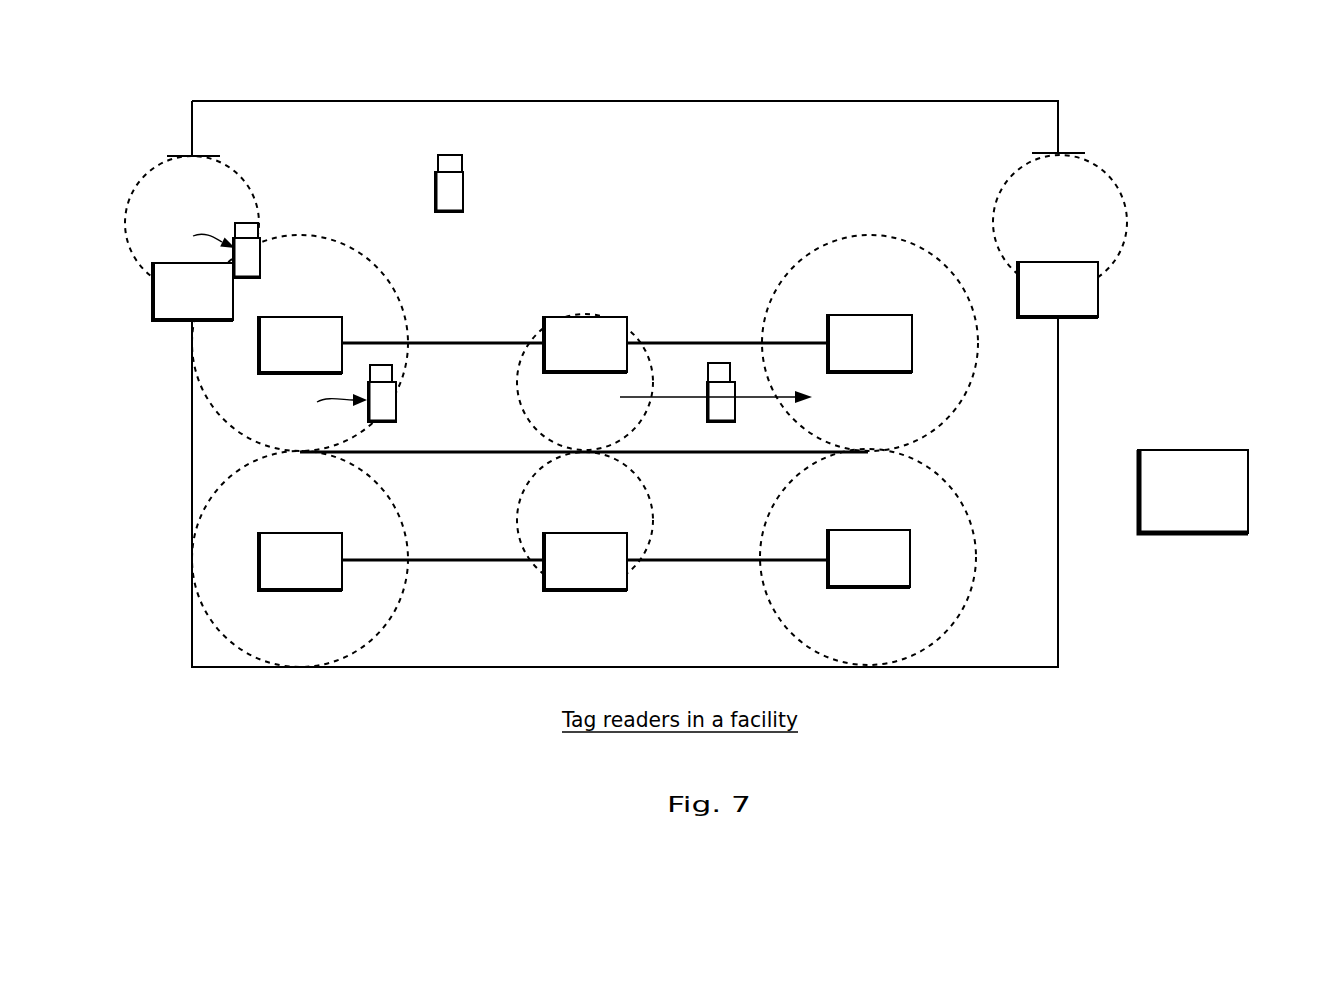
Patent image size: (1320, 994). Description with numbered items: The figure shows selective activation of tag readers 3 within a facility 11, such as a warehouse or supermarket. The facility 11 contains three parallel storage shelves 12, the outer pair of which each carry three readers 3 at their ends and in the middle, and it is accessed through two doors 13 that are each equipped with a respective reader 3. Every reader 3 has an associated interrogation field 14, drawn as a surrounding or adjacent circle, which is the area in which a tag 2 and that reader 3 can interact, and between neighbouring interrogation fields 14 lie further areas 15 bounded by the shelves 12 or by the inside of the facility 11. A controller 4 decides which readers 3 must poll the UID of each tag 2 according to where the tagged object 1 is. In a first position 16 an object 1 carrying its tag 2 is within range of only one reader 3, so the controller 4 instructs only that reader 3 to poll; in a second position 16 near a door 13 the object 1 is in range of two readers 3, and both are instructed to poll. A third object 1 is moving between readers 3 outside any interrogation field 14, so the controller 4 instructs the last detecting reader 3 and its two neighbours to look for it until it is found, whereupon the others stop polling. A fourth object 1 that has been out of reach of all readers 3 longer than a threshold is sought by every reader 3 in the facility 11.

The tagged object 1 is at (380, 403).
The tag 2 is at (380, 370).
The reader 3 is at (303, 333).
The controller 4 is at (1228, 492).
The facility 11 is at (1012, 667).
The storage shelf 12 is at (707, 342).
The door 13 is at (178, 184).
The interrogation field 14 is at (248, 365).
The area 15 is at (508, 444).
The position 16 is at (260, 325).